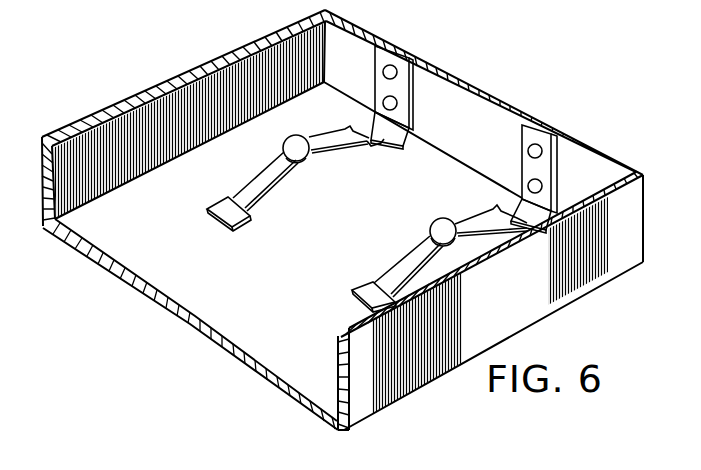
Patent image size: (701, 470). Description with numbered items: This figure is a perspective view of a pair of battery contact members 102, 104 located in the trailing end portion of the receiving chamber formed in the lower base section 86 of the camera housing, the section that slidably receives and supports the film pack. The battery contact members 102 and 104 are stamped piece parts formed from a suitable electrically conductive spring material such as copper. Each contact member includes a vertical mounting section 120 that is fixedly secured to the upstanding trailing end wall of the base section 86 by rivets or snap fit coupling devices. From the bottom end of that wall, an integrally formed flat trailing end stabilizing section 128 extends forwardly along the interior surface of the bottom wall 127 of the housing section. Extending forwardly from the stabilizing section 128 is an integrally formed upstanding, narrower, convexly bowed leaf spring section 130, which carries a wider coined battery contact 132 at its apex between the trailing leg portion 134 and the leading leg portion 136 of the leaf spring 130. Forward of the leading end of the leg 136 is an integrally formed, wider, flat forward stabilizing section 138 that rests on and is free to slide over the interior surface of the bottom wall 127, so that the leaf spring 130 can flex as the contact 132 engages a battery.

The lower base section 86 is at (241, 59).
The battery contact member 102 is at (362, 82).
The battery contact member 104 is at (505, 165).
The vertical mounting section 120 is at (380, 88).
The bottom wall 127 is at (193, 325).
The trailing end stabilizing section 128 is at (403, 137).
The leaf spring section 130 is at (295, 179).
The battery contact 132 is at (309, 160).
The trailing leg portion 134 is at (353, 142).
The leading leg portion 136 is at (260, 175).
The forward stabilizing section 138 is at (231, 229).